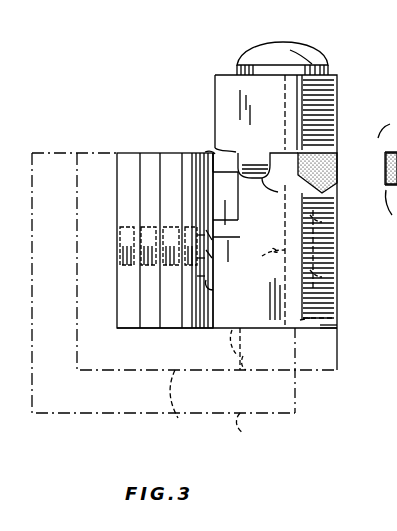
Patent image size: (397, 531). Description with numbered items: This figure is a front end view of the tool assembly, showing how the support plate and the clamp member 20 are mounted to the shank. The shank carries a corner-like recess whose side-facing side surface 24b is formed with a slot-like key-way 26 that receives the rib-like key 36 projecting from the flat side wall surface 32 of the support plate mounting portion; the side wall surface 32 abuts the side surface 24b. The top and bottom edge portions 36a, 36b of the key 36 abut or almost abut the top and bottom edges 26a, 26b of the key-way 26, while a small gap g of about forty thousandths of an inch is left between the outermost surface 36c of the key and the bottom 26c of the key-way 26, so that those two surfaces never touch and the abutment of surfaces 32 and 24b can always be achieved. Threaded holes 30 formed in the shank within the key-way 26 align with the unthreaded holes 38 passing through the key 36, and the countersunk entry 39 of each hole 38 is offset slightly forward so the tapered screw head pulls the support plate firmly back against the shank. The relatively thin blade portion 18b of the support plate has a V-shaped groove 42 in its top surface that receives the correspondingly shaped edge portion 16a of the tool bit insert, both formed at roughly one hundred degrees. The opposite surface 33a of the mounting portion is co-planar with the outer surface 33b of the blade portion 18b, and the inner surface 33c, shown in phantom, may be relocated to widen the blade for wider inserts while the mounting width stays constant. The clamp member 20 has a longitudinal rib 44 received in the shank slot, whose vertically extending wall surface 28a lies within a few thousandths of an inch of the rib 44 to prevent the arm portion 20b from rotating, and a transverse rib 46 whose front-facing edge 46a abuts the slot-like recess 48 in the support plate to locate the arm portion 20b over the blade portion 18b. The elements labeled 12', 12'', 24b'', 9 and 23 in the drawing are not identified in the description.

The first leg portion 12' is at (163, 298).
The second leg portion 12'' is at (207, 301).
The window portion 24b'' is at (325, 380).
The threaded hole 30 is at (116, 256).
The key-way 26 is at (200, 250).
The top edge of key-way 26a is at (200, 212).
The bottom of key-way 26c is at (200, 258).
The bottom edge of key-way 26b is at (200, 276).
The gap 9 is at (215, 244).
The key 36 is at (210, 286).
The top edge portion of key 36a is at (226, 211).
The outermost surface of key 36c is at (216, 237).
The hole 38 is at (270, 258).
The bottom edge portion of key 36b is at (280, 270).
The clamp member 20 is at (206, 93).
The cap 23 is at (306, 63).
The arm portion 20b is at (318, 100).
The longitudinal rib 44 is at (214, 112).
The vertically extending wall surface 28a is at (206, 151).
The transverse rib 46 is at (252, 152).
The slot-like recess 48 is at (292, 165).
The side surface 24b is at (247, 278).
The side wall surface 32 is at (230, 330).
The edge portion of insert 16a is at (330, 185).
The front-facing edge of transverse rib 46a is at (368, 168).
The V-shaped groove 42 is at (330, 198).
The countersunk entry 39 is at (333, 272).
The inner surface of blade portion 33c is at (298, 262).
The blade portion 18b is at (325, 303).
The outer surface of blade portion 33b is at (338, 328).
The opposite surface of mounting portion 33a is at (358, 332).